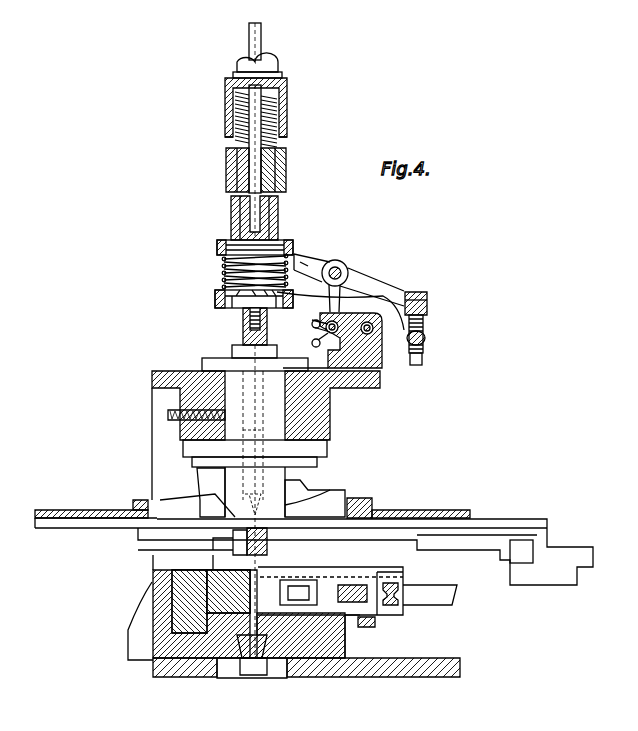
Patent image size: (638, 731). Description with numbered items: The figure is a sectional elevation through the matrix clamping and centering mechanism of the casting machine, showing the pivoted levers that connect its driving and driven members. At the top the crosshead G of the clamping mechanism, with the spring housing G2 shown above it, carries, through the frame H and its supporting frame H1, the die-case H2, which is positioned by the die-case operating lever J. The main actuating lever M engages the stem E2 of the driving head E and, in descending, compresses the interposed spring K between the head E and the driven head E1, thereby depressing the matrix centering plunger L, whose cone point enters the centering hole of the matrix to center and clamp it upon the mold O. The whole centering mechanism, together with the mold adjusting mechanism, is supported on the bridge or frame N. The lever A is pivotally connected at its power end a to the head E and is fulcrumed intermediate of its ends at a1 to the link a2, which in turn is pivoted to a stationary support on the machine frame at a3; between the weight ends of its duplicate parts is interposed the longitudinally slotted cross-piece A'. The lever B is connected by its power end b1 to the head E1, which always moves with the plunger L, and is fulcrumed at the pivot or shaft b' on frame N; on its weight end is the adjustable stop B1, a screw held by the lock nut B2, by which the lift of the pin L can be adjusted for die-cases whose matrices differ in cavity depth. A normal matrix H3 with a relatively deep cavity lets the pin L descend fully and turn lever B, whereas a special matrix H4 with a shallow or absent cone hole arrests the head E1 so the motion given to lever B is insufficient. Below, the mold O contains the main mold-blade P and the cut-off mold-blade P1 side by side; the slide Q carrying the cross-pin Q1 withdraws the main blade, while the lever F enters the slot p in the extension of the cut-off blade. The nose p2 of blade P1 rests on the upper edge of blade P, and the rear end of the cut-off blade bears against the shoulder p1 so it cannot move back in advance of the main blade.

The die-case operating lever J is at (283, 113).
The spring G2 is at (236, 112).
The crosshead G is at (287, 167).
The stem of the head E E2 is at (255, 190).
The main actuating lever M is at (262, 240).
The driving member (head) E is at (228, 241).
The interposed spring K is at (227, 270).
The driven member (head) E1 is at (265, 294).
The pivot or shaft of lever B b' is at (240, 325).
The matrix centering plunger L is at (262, 336).
The lever A is at (340, 283).
The power end of lever A a is at (307, 268).
The fulcrum of lever A a1 is at (340, 271).
The lever B is at (387, 335).
The power end of lever B b1 is at (369, 324).
The link a2 is at (316, 329).
The pivot of link a² a3 is at (314, 346).
The longitudinally slotted cross-piece A' is at (436, 290).
The adjustable stop B1 is at (424, 333).
The lock nut B2 is at (422, 360).
The bridge or frame N is at (323, 418).
The matrix with shallow or no cone hole H4 is at (225, 500).
The frame H is at (297, 488).
The matrix with deep cavity H3 is at (318, 498).
The supporting frame H1 is at (358, 507).
The die-case H2 is at (380, 538).
The mold O is at (153, 587).
The main mold-blade P is at (405, 583).
The nose or projection p2 is at (262, 580).
The shoulder p1 is at (403, 580).
The cross-pin Q1 is at (398, 598).
The slide Q is at (448, 600).
The slot p is at (373, 622).
The lever F is at (363, 625).
The cut-off mold-blade P1 is at (353, 628).